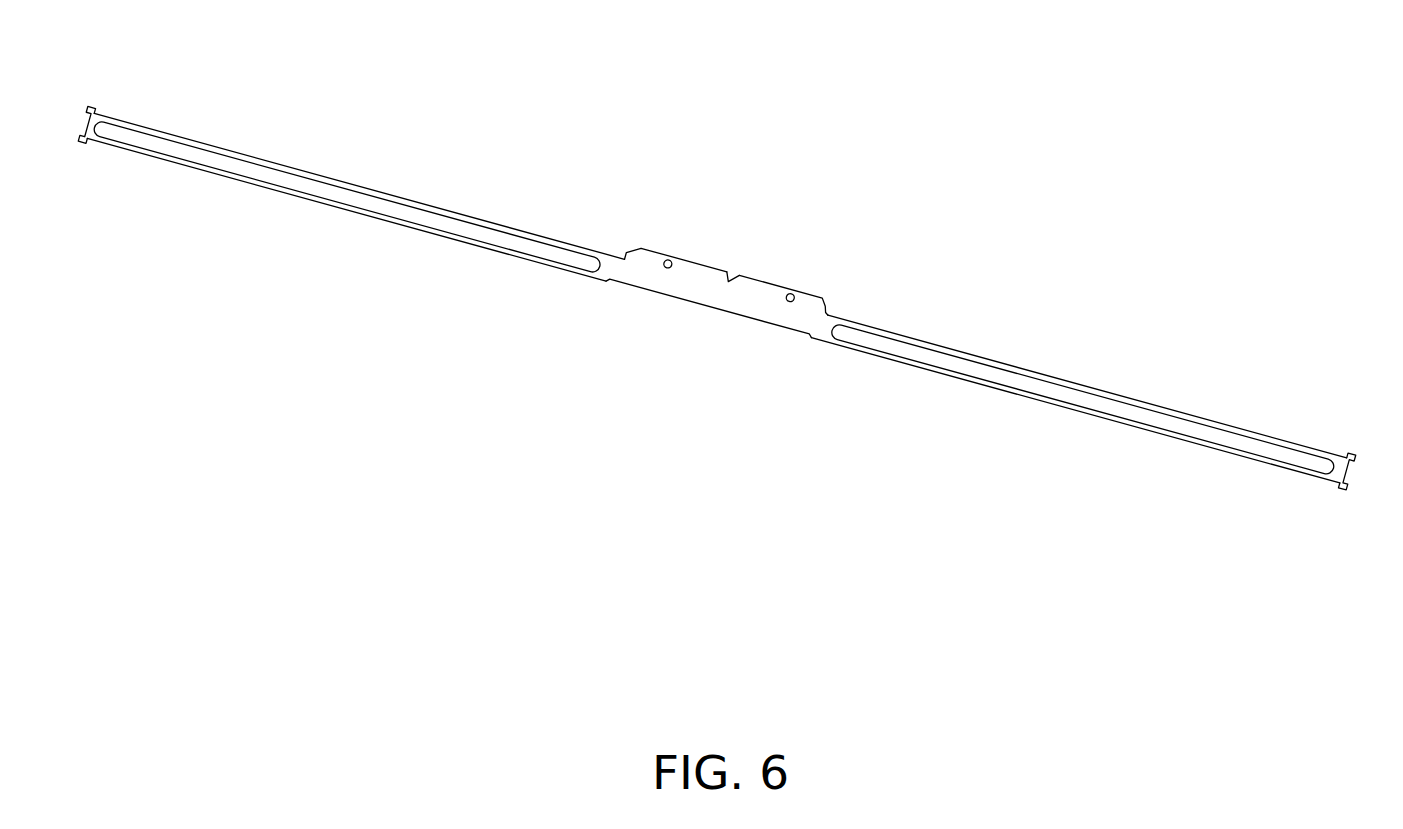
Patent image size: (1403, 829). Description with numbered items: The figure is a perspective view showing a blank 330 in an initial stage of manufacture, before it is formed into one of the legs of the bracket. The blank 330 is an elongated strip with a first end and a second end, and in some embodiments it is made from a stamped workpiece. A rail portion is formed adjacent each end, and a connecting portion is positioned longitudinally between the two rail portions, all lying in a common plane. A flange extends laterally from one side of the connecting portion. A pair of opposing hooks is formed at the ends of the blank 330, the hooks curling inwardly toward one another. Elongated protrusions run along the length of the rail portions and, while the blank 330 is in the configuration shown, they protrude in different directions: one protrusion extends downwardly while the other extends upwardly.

The blank 330 is at (1013, 152).